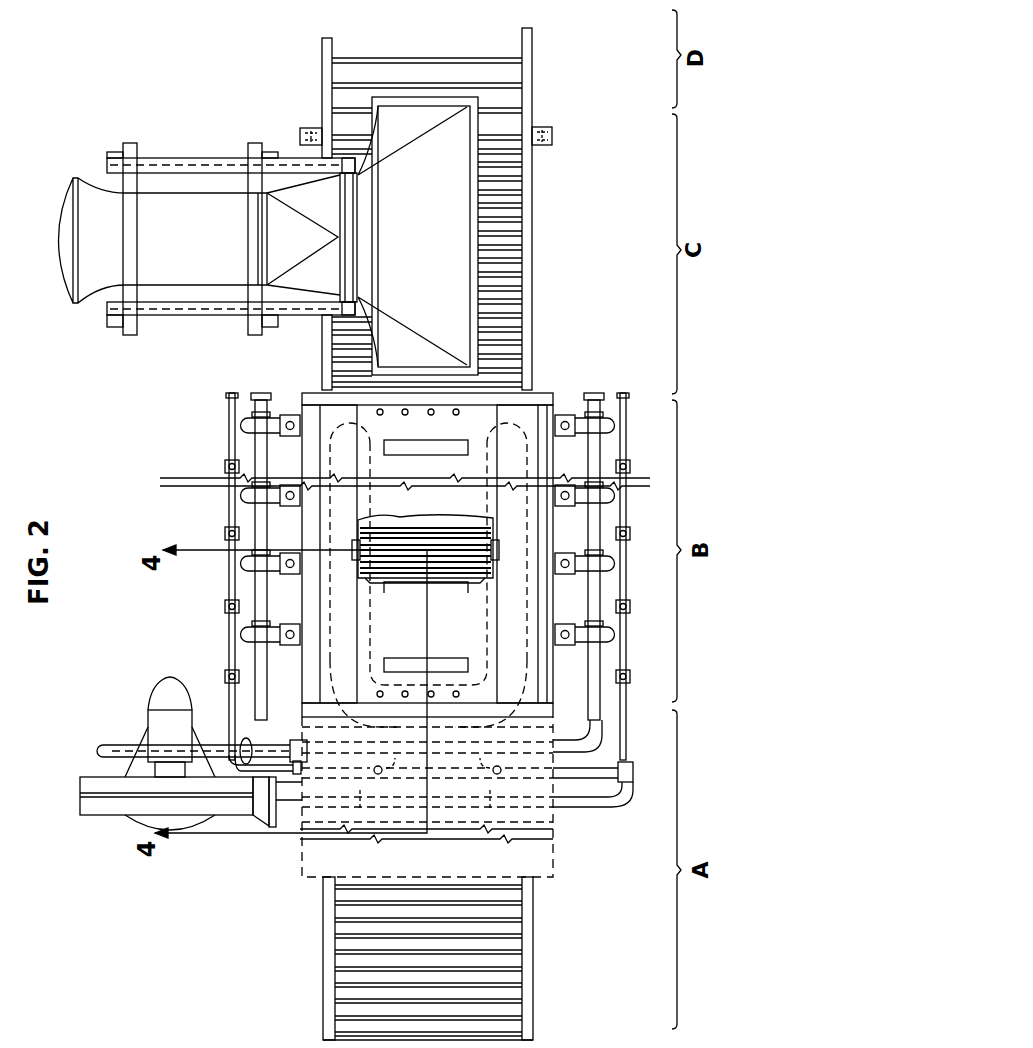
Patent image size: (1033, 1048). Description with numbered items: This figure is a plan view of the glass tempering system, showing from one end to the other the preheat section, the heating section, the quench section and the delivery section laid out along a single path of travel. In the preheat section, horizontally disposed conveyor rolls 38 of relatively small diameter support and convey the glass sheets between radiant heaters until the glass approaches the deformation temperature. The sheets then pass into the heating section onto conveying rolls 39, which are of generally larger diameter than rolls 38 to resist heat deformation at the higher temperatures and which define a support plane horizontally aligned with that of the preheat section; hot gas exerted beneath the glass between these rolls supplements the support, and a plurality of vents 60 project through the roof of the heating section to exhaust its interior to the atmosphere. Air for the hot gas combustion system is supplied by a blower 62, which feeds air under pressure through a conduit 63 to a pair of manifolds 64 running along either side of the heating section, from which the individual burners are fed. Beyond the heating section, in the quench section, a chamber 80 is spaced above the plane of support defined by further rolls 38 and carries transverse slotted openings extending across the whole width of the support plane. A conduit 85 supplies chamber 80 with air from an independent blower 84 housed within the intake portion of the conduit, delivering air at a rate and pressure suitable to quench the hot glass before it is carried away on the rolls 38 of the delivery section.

The conveyor rolls 38 is at (512, 288).
The conveying rolls 39 is at (498, 546).
The vents 60 is at (422, 657).
The blower 62 is at (104, 815).
The conduit 63 is at (277, 802).
The manifolds 64 is at (330, 661).
The chamber 80 is at (418, 236).
The blower 84 is at (232, 239).
The conduit 85 is at (60, 270).